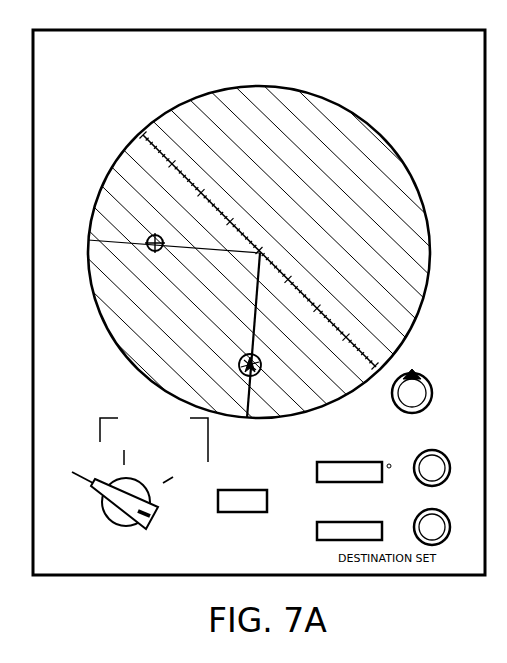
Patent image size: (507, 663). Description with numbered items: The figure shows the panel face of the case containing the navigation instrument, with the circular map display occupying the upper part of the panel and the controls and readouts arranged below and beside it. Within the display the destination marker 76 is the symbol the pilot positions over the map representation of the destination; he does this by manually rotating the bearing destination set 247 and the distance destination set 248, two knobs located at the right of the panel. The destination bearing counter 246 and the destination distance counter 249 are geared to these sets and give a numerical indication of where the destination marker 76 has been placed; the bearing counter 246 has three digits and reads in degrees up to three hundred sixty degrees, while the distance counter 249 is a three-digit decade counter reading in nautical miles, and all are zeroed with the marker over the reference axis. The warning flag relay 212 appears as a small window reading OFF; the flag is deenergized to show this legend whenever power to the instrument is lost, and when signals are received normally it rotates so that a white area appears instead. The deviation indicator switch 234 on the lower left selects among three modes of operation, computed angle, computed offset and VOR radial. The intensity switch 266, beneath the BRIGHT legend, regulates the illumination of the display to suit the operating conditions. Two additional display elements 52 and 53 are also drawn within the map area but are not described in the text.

The destination marker 76 is at (148, 237).
The aircraft position symbol 52 is at (261, 361).
The course line 53 is at (244, 374).
The warning flag relay 212 is at (245, 489).
The deviation indicator switch 234 is at (102, 510).
The destination bearing counter 246 is at (317, 468).
The bearing destination set 247 is at (446, 458).
The distance destination set 248 is at (446, 517).
The destination distance counter 249 is at (317, 526).
The intensity switch 266 is at (432, 395).